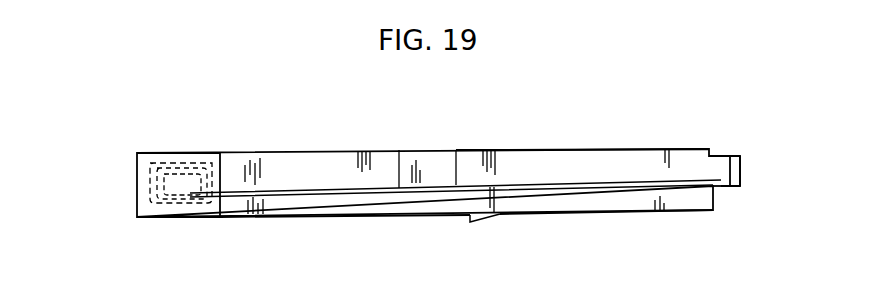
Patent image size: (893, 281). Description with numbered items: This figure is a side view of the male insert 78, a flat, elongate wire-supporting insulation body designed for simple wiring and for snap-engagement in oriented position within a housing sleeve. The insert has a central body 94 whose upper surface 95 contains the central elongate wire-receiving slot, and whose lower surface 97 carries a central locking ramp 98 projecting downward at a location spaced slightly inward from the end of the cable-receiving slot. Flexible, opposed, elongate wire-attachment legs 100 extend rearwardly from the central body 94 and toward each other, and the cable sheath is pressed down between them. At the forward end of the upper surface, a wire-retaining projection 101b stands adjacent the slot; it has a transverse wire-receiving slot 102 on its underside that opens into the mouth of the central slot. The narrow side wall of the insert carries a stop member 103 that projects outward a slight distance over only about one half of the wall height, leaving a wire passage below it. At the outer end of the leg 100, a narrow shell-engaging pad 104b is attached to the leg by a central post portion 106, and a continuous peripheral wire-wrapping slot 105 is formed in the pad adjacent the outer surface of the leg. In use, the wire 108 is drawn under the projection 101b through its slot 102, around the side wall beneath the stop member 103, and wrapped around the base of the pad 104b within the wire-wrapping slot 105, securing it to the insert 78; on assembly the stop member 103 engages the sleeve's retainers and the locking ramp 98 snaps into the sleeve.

The male insert 78 is at (345, 137).
The central body 94 is at (623, 175).
The upper surface 95 is at (570, 150).
The lower surface 97 is at (552, 214).
The locking ramp 98 is at (473, 222).
The wire-attachment legs 100 is at (337, 206).
The wire-retaining projection 101b is at (740, 165).
The transverse wire-receiving slot 102 is at (718, 187).
The stop member 103 is at (433, 160).
The shell-engaging pad 104b is at (150, 160).
The wire-wrapping slot 105 is at (137, 217).
The central post portion 106 is at (150, 184).
The wire 108 is at (185, 203).